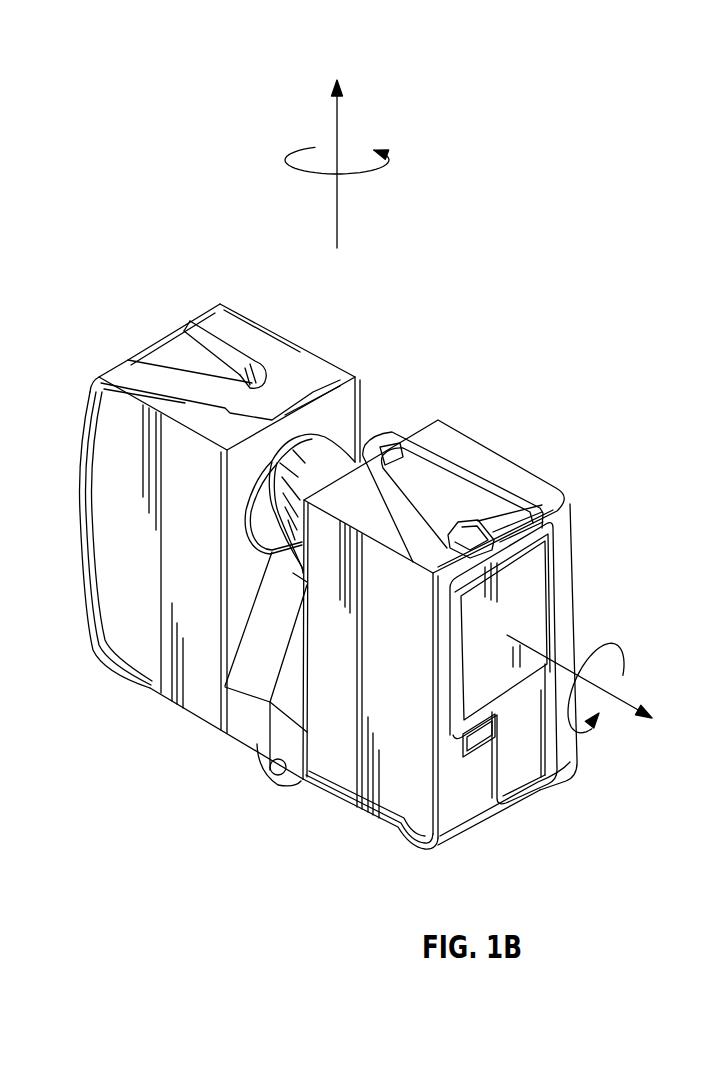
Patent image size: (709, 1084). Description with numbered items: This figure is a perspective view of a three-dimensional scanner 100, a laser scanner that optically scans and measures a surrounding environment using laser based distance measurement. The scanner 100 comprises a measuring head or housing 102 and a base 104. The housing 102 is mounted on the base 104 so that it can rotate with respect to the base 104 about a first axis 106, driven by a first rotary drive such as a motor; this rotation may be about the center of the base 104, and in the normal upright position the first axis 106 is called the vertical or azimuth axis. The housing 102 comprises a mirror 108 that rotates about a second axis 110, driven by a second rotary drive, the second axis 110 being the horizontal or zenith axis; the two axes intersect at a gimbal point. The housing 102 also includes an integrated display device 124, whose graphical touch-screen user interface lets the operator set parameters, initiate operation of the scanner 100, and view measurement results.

The 3D scanner 100 is at (212, 281).
The housing 102 is at (504, 634).
The base 104 is at (300, 780).
The first axis 106 is at (338, 123).
The mirror 108 is at (332, 466).
The second axis 110 is at (630, 717).
The display device 124 is at (527, 600).